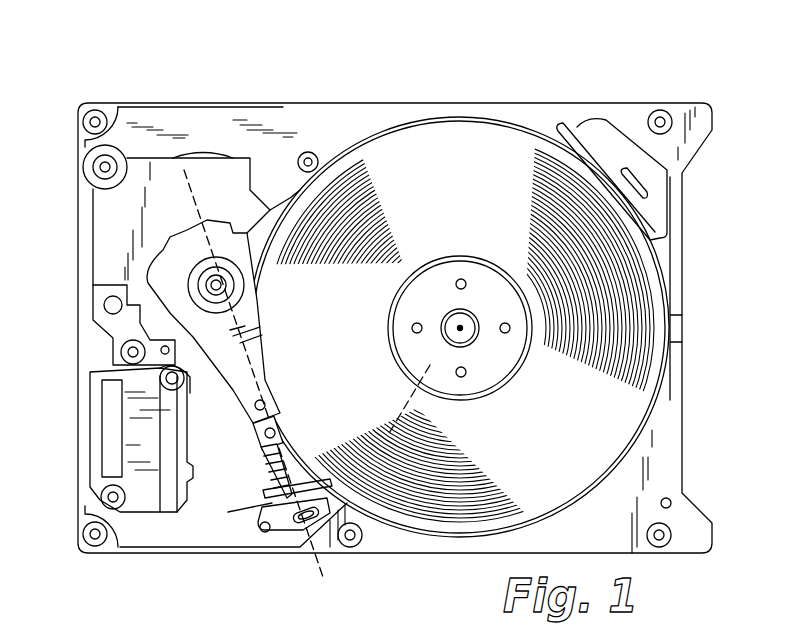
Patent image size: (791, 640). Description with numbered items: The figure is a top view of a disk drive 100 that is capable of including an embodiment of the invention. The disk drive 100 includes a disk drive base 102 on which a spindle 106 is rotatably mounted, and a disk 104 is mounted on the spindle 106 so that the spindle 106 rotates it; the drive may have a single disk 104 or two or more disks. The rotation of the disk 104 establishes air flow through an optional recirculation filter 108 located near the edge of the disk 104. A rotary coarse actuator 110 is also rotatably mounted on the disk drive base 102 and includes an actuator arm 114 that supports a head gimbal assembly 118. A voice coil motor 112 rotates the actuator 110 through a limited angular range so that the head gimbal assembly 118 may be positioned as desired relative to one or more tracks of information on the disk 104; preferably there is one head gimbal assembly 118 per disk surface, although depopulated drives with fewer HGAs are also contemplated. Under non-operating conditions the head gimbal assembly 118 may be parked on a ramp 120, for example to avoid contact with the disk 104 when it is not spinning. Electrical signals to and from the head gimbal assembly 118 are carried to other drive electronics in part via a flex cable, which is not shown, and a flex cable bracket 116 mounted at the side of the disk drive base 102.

The disk drive 100 is at (329, 60).
The disk drive base 102 is at (676, 450).
The disk 104 is at (458, 132).
The spindle 106 is at (476, 272).
The recirculation filter 108 is at (592, 152).
The rotary coarse actuator 110 is at (203, 320).
The voice coil motor 112 is at (222, 182).
The actuator arm 114 is at (237, 399).
The flex cable bracket 116 is at (135, 455).
The head gimbal assembly 118 is at (270, 457).
The ramp 120 is at (280, 523).